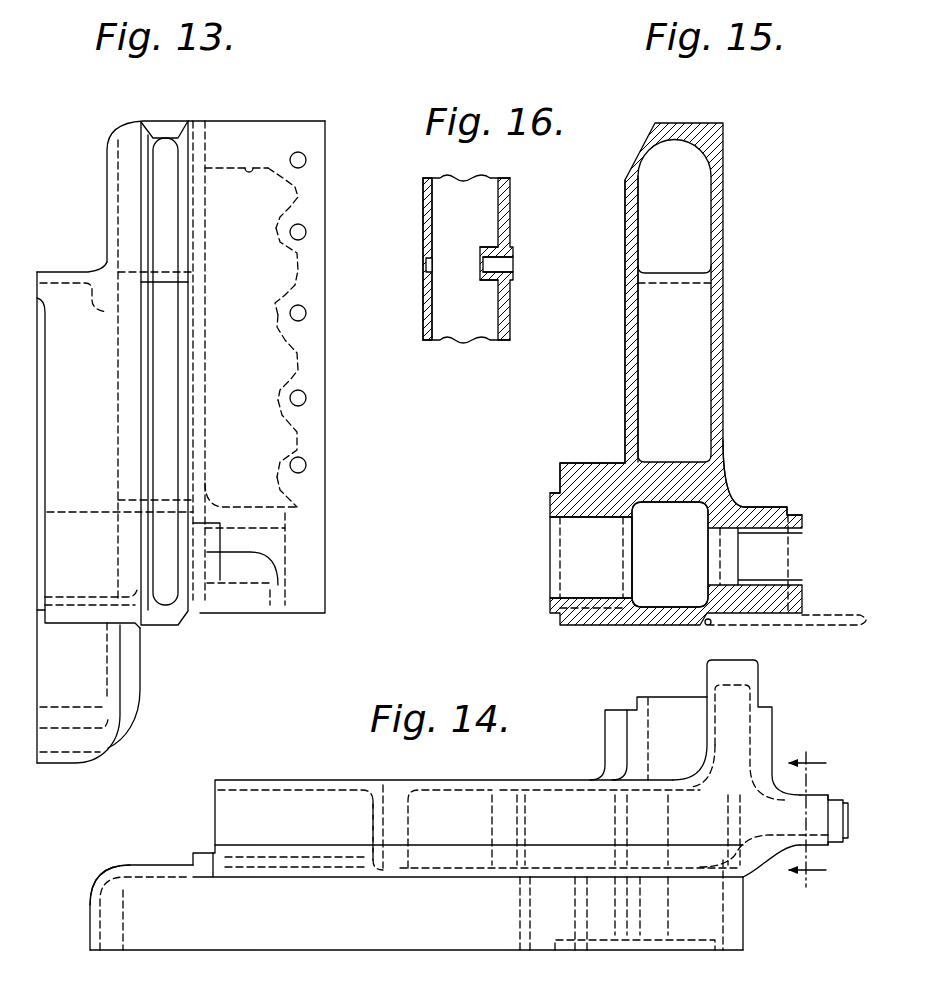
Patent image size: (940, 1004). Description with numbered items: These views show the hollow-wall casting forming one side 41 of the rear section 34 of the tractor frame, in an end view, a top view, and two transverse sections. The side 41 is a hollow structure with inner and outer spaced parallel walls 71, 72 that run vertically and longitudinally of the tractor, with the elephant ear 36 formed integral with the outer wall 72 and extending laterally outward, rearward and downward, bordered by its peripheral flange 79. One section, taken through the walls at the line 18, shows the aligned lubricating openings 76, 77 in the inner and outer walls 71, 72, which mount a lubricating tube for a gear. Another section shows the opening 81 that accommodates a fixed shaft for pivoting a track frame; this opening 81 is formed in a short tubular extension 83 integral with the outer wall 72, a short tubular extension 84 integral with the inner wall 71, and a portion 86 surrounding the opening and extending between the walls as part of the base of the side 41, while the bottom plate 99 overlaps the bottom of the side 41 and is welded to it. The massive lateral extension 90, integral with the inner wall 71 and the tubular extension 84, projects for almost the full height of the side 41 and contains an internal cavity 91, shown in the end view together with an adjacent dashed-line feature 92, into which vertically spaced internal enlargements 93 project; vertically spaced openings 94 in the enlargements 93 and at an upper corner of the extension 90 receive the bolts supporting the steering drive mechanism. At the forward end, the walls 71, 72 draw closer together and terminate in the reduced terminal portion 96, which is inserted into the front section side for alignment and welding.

In FIG. 14, the section line 18— 18 is at (808, 820).
In FIG. 14, the rear section 34 is at (285, 778).
In FIG. 13, the elephant ear 36 is at (142, 692).
In FIG. 14, the elephant ear 36 is at (126, 868).
In FIG. 13, the side 41 is at (98, 182).
In FIG. 14, the side 41 is at (350, 778).
In FIG. 16, the inner wall 71 is at (423, 208).
In FIG. 15, the inner wall 71 is at (725, 312).
In FIG. 14, the inner wall 71 is at (818, 795).
In FIG. 16, the outer wall 72 is at (504, 210).
In FIG. 15, the outer wall 72 is at (625, 338).
In FIG. 14, the outer wall 72 is at (530, 876).
In FIG. 16, the opening 76 is at (428, 268).
In FIG. 16, the opening 77 is at (513, 262).
In FIG. 14, the peripheral flange 79 is at (88, 921).
In FIG. 15, the opening 81 is at (576, 520).
In FIG. 14, the opening 81 is at (655, 712).
In FIG. 15, the short tubular extension 83 is at (583, 462).
In FIG. 14, the short tubular extension 83 is at (745, 940).
In FIG. 15, the short tubular extension 84 is at (738, 505).
In FIG. 14, the short tubular extension 84 is at (605, 728).
In FIG. 15, the portion 86 is at (668, 497).
In FIG. 13, the massive lateral extension 90 is at (316, 212).
In FIG. 14, the massive lateral extension 90 is at (760, 679).
In FIG. 13, the internal cavity 91 is at (247, 165).
In FIG. 13, the recess 92 is at (270, 190).
In FIG. 13, the internal enlargement 93 is at (262, 273).
In FIG. 13, the opening 94 is at (306, 157).
In FIG. 13, the reduced terminal portion 96 is at (178, 140).
In FIG. 14, the reduced terminal portion 96 is at (848, 822).
In FIG. 15, the bottom plate 99 is at (840, 613).